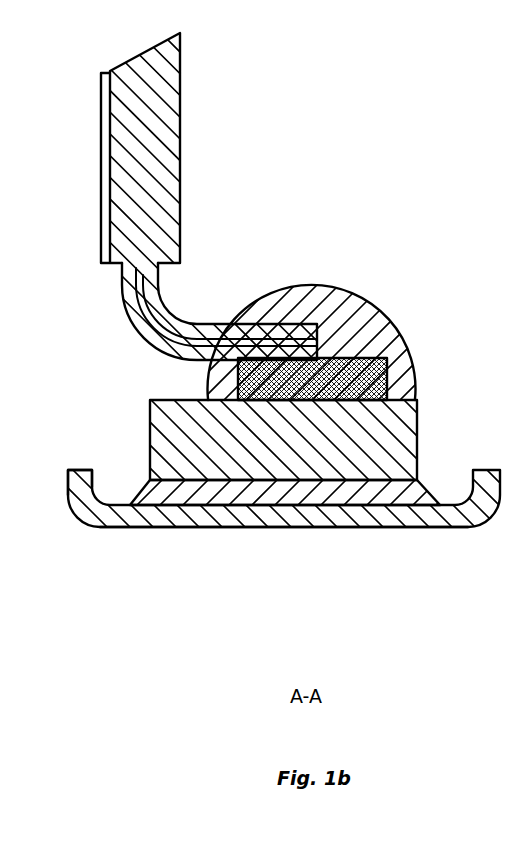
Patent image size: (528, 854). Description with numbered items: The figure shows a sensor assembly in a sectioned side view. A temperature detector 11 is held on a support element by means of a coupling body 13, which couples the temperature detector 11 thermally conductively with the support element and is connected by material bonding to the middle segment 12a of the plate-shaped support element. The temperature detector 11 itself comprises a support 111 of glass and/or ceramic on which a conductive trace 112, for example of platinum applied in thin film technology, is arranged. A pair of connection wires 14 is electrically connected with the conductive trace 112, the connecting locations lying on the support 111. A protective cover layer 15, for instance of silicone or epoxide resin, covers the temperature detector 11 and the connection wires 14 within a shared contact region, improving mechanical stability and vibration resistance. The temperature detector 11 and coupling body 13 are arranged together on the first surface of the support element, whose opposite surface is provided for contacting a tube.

The temperature detector 11 is at (303, 334).
The support 111 is at (407, 410).
The conductive trace 112 is at (387, 377).
The middle segment 12a is at (275, 523).
The coupling body 13 is at (430, 482).
The connection wires 14 is at (168, 108).
The protective cover layer 15 is at (329, 300).